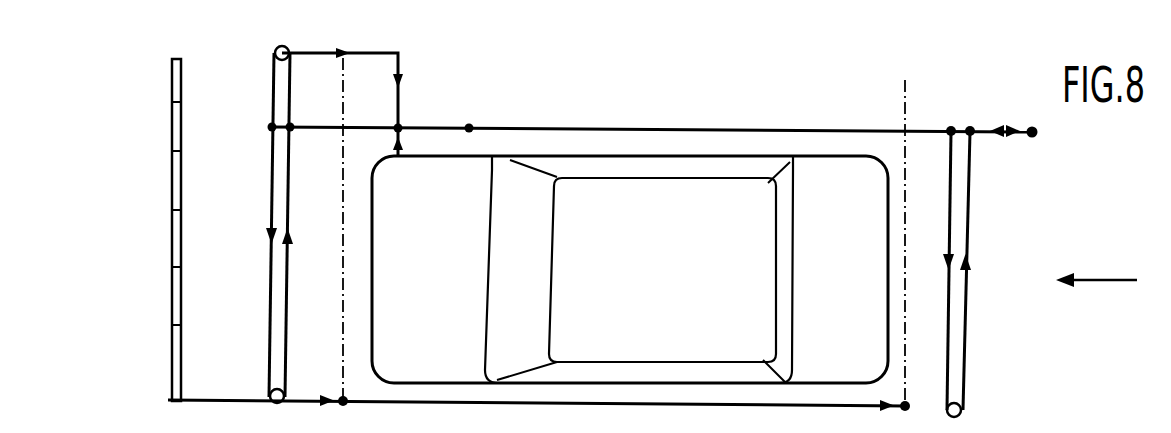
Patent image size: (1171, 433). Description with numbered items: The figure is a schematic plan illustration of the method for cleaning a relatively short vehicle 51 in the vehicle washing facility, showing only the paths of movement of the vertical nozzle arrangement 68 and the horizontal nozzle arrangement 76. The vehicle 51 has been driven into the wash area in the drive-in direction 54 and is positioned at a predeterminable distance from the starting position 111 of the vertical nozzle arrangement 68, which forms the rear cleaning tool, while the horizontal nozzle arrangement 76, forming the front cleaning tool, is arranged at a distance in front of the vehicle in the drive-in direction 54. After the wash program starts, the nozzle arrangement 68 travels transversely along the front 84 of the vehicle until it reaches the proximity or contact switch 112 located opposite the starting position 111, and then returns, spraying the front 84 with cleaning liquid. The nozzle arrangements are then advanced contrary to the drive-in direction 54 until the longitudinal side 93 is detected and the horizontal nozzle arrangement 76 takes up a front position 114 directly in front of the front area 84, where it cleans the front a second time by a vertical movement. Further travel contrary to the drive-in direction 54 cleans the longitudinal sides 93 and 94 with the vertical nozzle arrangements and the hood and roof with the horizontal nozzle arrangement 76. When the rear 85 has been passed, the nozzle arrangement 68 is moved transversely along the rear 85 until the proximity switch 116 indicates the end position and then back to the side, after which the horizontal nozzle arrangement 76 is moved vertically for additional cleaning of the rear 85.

The relatively short vehicle 51 is at (647, 183).
The drive-in direction 54 is at (1120, 280).
The vertical nozzle arrangement 68 is at (272, 128).
The horizontal nozzle arrangement 76 is at (172, 123).
The front area 84 is at (372, 258).
The rear area 85 is at (888, 187).
The longitudinal side 93 is at (556, 156).
The longitudinal side 94 is at (556, 385).
The starting position 111 is at (276, 53).
The proximity or contact switch 112 is at (272, 403).
The front position 114 is at (343, 404).
The proximity switch 116 is at (961, 411).